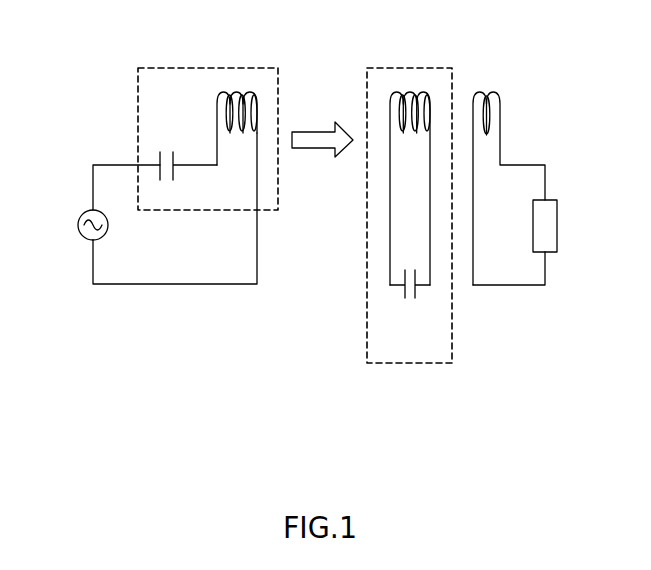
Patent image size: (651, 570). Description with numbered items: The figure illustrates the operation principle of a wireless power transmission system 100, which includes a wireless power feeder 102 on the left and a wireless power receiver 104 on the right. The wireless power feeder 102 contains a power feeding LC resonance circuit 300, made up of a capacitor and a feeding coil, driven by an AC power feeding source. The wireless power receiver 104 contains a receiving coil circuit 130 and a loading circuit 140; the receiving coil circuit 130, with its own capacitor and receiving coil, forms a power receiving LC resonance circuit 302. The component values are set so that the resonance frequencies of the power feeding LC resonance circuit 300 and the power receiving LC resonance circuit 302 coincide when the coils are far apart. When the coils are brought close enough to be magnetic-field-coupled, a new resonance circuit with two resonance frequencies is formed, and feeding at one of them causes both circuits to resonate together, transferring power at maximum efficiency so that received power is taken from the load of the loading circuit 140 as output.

The wireless power transmission system 100 is at (317, 247).
The wireless power feeder 102 is at (165, 185).
The wireless power receiver 104 is at (475, 219).
The receiving coil circuit 130 is at (437, 300).
The loading circuit 140 is at (527, 218).
The power feeding LC resonance circuit 300 is at (210, 67).
The power receiving LC resonance circuit 302 is at (409, 193).